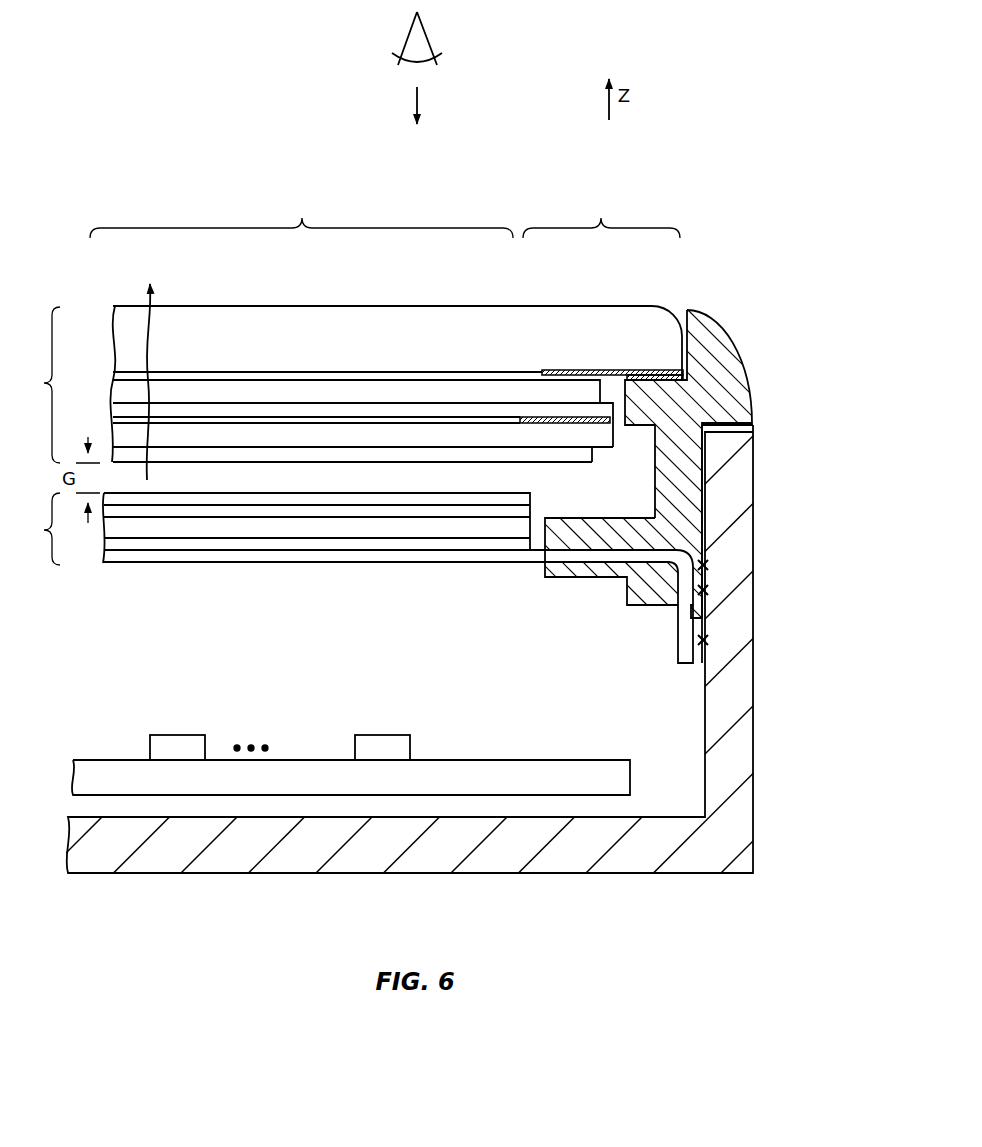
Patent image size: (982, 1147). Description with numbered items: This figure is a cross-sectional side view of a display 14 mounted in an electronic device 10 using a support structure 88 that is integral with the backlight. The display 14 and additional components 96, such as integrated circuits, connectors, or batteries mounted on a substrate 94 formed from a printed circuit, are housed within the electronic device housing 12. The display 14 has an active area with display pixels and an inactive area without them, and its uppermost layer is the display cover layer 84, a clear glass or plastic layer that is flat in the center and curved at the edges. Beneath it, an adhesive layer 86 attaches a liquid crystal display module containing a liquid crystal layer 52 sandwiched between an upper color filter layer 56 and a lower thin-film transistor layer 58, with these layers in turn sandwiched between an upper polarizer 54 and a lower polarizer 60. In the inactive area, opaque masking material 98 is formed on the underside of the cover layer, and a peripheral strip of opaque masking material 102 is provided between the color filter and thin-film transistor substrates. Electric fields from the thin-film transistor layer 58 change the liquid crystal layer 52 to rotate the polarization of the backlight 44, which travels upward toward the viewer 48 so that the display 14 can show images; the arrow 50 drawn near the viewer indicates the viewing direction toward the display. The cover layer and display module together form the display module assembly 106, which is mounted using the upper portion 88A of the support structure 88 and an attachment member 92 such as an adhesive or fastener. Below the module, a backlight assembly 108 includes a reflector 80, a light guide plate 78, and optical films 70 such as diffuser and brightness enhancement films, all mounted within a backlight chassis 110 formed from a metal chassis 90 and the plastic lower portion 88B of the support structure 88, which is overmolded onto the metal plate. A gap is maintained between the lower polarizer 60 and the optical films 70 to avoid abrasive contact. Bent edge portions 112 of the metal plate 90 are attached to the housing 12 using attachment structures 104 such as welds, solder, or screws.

The electronic device 10 is at (717, 125).
The electronic device housing 12 is at (745, 527).
The display 14 is at (256, 189).
The backlight 44 is at (146, 292).
The viewer 48 is at (427, 33).
The viewing direction 50 is at (418, 110).
The liquid crystal layer 52 is at (490, 418).
The upper polarizer 54 is at (278, 392).
The color filter layer 56 is at (323, 407).
The thin-film transistor layer 58 is at (375, 432).
The lower polarizer 60 is at (432, 450).
The optical films 70 is at (155, 497).
The light guide plate 78 is at (290, 528).
The reflector 80 is at (377, 540).
The display cover layer 84 is at (178, 318).
The adhesive layer 86 is at (227, 372).
The support structure 88 is at (717, 345).
The upper portion of support structure 88A is at (771, 378).
The lower portion of support structure 88B is at (600, 512).
The metal chassis 90 is at (450, 555).
The attachment member 92 is at (640, 377).
The substrate 94 is at (498, 762).
The components 96 is at (180, 740).
The opaque masking material 98 is at (568, 370).
The opaque masking material 102 is at (598, 425).
The attachment structures 104 is at (706, 566).
The display module assembly 106 is at (63, 384).
The backlight assembly 108 is at (58, 529).
The backlight chassis 110 is at (517, 586).
The bent edge portions 112 is at (662, 622).